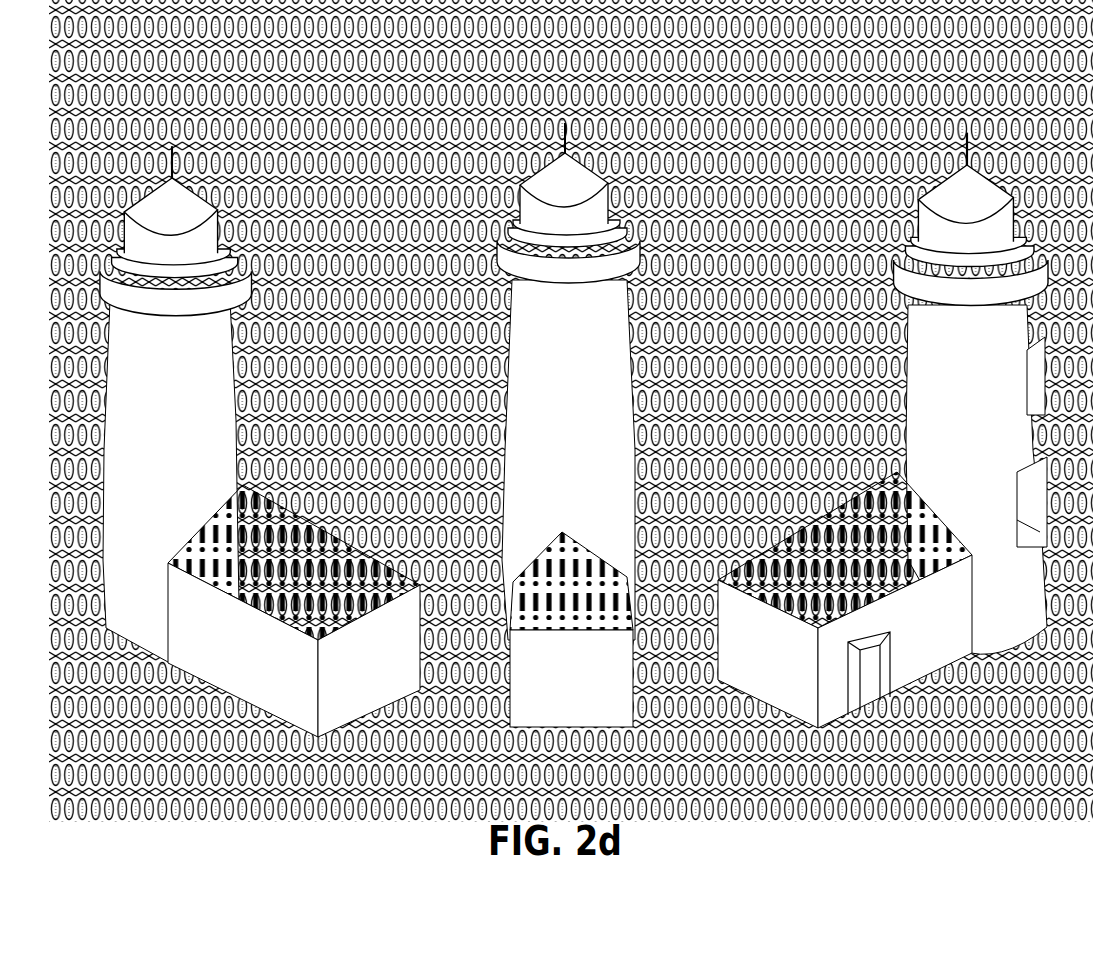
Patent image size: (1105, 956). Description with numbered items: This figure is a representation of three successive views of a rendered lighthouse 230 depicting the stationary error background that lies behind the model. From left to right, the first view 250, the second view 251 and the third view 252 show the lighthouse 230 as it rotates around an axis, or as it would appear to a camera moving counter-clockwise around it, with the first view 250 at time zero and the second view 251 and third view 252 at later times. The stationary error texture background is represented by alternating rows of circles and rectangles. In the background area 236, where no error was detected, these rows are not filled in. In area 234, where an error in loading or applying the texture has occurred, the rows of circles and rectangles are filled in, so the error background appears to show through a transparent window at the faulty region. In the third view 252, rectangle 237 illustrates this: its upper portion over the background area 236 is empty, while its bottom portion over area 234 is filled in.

The lighthouse 230 is at (224, 300).
The error texture area 234 is at (267, 515).
The background area 236 is at (571, 411).
The rectangle 237 is at (753, 540).
The view 1 250 is at (273, 672).
The view 2 251 is at (569, 713).
The view 3 252 is at (870, 714).